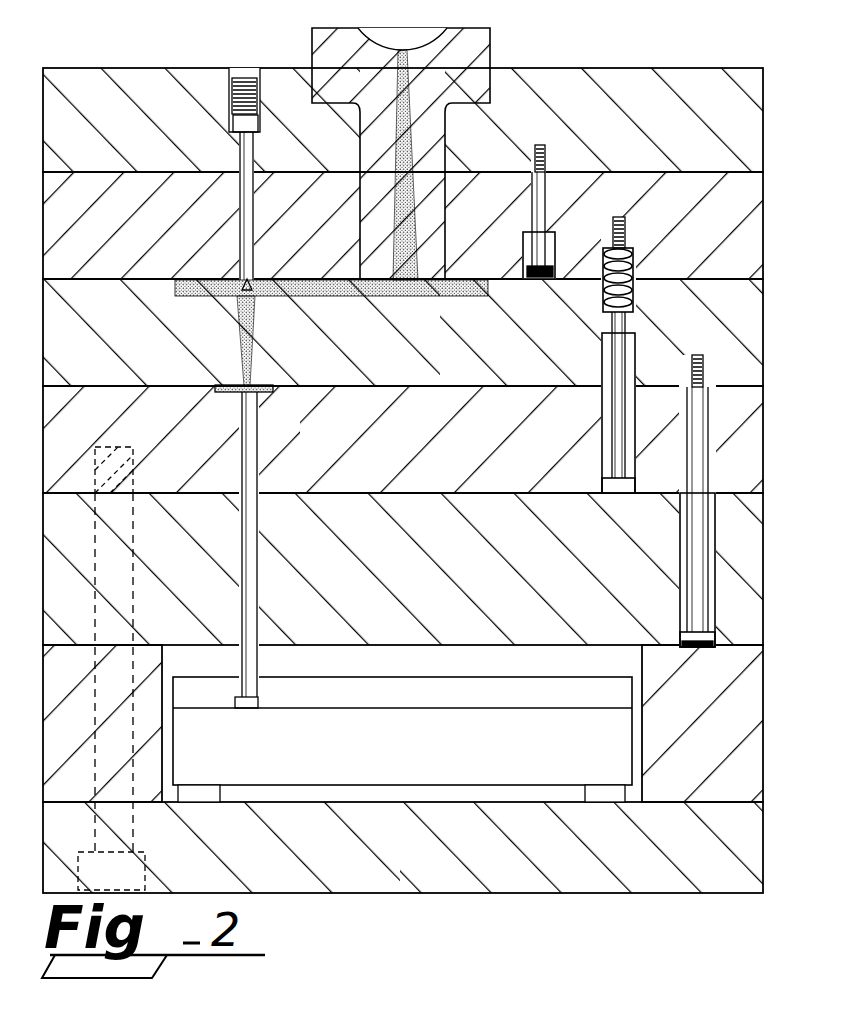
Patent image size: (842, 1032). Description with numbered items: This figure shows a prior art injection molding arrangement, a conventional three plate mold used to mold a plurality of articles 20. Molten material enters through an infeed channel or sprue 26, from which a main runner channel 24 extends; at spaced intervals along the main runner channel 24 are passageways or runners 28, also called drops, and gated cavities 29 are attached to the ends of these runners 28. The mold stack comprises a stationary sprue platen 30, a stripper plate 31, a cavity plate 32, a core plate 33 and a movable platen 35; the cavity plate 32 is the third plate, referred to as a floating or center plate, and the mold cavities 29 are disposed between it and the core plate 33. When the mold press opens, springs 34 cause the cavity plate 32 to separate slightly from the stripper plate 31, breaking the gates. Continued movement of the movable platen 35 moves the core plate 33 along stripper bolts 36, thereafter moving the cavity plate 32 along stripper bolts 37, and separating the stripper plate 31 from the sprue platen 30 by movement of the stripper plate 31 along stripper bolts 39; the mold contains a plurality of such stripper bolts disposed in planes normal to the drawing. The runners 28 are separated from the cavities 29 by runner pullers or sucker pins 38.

The article 20 is at (262, 397).
The main runner channel 24 is at (405, 297).
The sprue 26 is at (412, 100).
The runner 28 is at (247, 330).
The gated cavity 29 is at (226, 385).
The stationary sprue platen 30 is at (683, 82).
The stripper plate 31 is at (747, 203).
The cavity plate 32 is at (745, 320).
The core plate 33 is at (750, 415).
The spring 34 is at (627, 278).
The movable platen 35 is at (748, 695).
The stripper bolt 36 is at (697, 422).
The stripper bolt 37 is at (620, 328).
The sucker pin 38 is at (250, 235).
The stripper bolt 39 is at (540, 200).